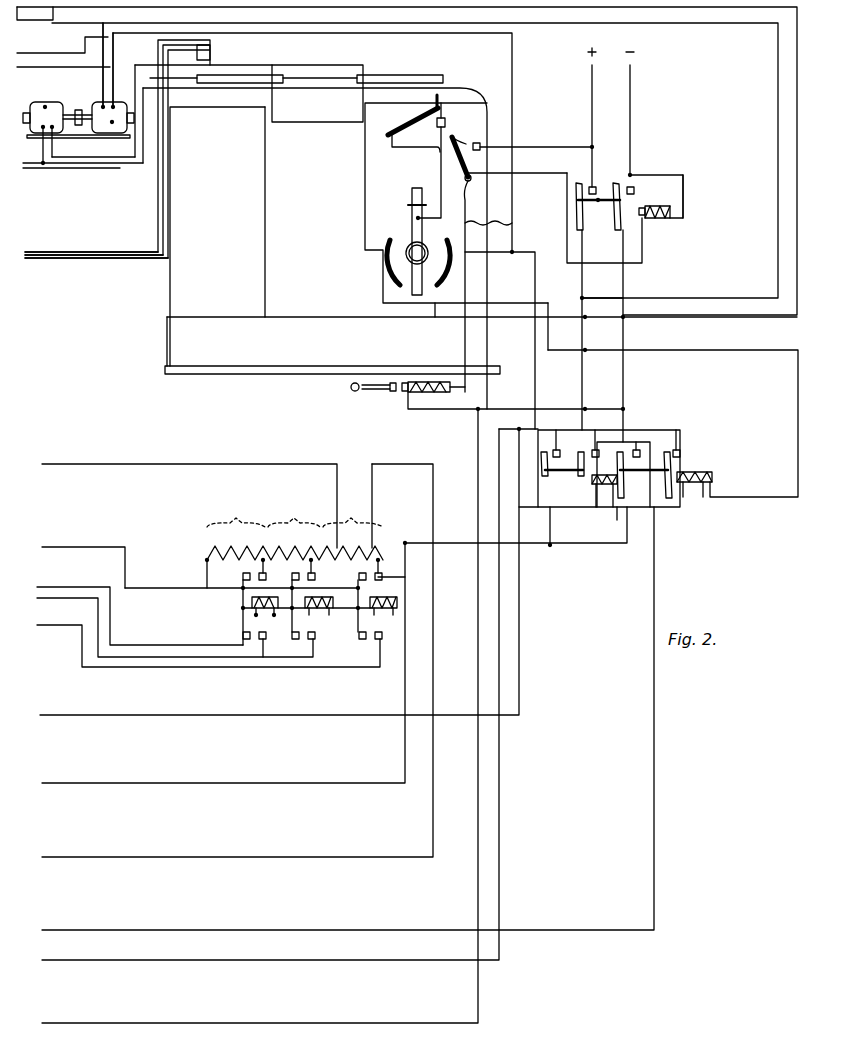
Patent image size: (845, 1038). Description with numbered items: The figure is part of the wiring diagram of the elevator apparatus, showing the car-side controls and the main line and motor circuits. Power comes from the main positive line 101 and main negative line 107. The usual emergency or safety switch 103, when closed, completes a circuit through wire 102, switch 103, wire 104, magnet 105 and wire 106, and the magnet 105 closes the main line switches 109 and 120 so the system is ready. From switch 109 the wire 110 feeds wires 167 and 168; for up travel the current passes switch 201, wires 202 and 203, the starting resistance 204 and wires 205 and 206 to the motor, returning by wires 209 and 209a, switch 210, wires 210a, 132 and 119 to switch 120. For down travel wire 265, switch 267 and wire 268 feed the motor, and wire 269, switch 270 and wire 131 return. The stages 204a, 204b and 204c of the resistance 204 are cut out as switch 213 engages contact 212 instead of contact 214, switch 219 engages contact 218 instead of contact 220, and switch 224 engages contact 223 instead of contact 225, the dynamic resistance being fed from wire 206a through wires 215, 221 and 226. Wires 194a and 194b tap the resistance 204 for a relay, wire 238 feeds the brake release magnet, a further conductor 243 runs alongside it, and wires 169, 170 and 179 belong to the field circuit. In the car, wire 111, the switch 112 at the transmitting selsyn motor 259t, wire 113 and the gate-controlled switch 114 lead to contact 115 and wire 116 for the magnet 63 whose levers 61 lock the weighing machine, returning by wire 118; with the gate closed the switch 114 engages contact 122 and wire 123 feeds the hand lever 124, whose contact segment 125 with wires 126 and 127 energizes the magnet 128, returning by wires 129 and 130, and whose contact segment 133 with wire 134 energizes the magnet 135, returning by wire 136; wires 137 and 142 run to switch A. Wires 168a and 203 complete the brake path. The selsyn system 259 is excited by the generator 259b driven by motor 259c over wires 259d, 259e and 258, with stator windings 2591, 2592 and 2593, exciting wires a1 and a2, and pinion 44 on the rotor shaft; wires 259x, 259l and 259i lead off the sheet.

The wire 258 is at (797, 128).
The wire 259d is at (415, 161).
The wire 259e is at (79, 59).
The transmitting selsyn motor 259t is at (275, 36).
The wire 137 is at (520, 62).
The switch A a is at (180, 138).
The selsyn motor system 259 is at (96, 147).
The poly-circuit stator winding 2591 is at (140, 252).
The poly-circuit stator winding 2592 is at (98, 255).
The poly-circuit stator winding 2593 is at (75, 249).
The alternating current generator 259b is at (70, 88).
The electric motor 259c is at (112, 122).
The exciting wire a1 is at (43, 163).
The exciting wire a2 is at (70, 163).
The switch at transmitting selsyn motor 112 is at (296, 91).
The wire 113 is at (310, 122).
The pinion 44 is at (198, 83).
The wire 111 is at (265, 172).
The wire 142 is at (365, 182).
The switch 114 is at (415, 120).
The contact 115 is at (393, 140).
The contact 122 is at (446, 122).
The wire 123 is at (445, 182).
The hand lever 124 is at (412, 207).
The contact segment 133 is at (408, 248).
The wire 134 is at (383, 297).
The wire 116 is at (512, 223).
The wire 126 is at (488, 252).
The wire 127 is at (535, 293).
The contact segment 125 is at (440, 310).
The wire 102 is at (548, 135).
The emergency or safety switch 103 is at (508, 140).
The wire 104 is at (533, 172).
The main positive line 101 is at (592, 90).
The main negative line 107 is at (630, 98).
The magnet 105 is at (655, 218).
The wire 106 is at (683, 197).
The main line switch 109 is at (578, 200).
The main line switch 120 is at (617, 228).
The wire 110 is at (582, 280).
The wire 119 is at (623, 372).
The wire 167 is at (585, 364).
The wire 168 is at (585, 409).
The lever 61 is at (374, 392).
The electric magnet 63 is at (408, 395).
The wire 118 is at (430, 409).
The wire 169 is at (505, 409).
The wire 179 is at (505, 409).
The wire 168a is at (497, 429).
The wire 170 is at (499, 440).
The wire 265 is at (680, 430).
The wire 130 is at (640, 468).
The wire 132 is at (623, 430).
The wire 131 is at (650, 442).
The wire 210a is at (578, 443).
The up-travel switch 201 is at (570, 459).
The up-travel switch 210 is at (590, 497).
The magnet 128 is at (603, 481).
The down-travel switch 270 is at (648, 464).
The down-travel switch 267 is at (672, 460).
The magnet 135 is at (712, 477).
The wire 129 is at (617, 507).
The wire 268 is at (667, 512).
The wire 136 is at (667, 510).
The wire 202 is at (550, 545).
The wire 269 is at (573, 545).
The wire 209a is at (577, 537).
The wire 209 is at (654, 700).
The wire 203 is at (458, 535).
The conductor 243 is at (519, 645).
The wire 238 is at (405, 700).
The contact 223 is at (383, 577).
The wire 194a is at (189, 496).
The wire 194b is at (237, 661).
The starting resistance 204 is at (295, 543).
The first stage resistance 204a is at (236, 513).
The second stage resistance 204b is at (294, 513).
The third stage resistance 204c is at (353, 513).
The wire 206 is at (83, 558).
The wire 206a is at (242, 598).
The wire 205 is at (207, 570).
The contact 212 is at (259, 577).
The contact 218 is at (315, 577).
The switch 213 is at (243, 608).
The switch 219 is at (268, 618).
The switch 224 is at (326, 607).
The relay 225 is at (377, 606).
The wire 215 is at (140, 607).
The contact 214 is at (272, 648).
The wire 221 is at (173, 673).
The contact 220 is at (315, 640).
The wire 226 is at (340, 657).
The conductor 259x is at (59, 1029).
The conductor 259l is at (147, 1029).
The conductor 259i is at (417, 1029).